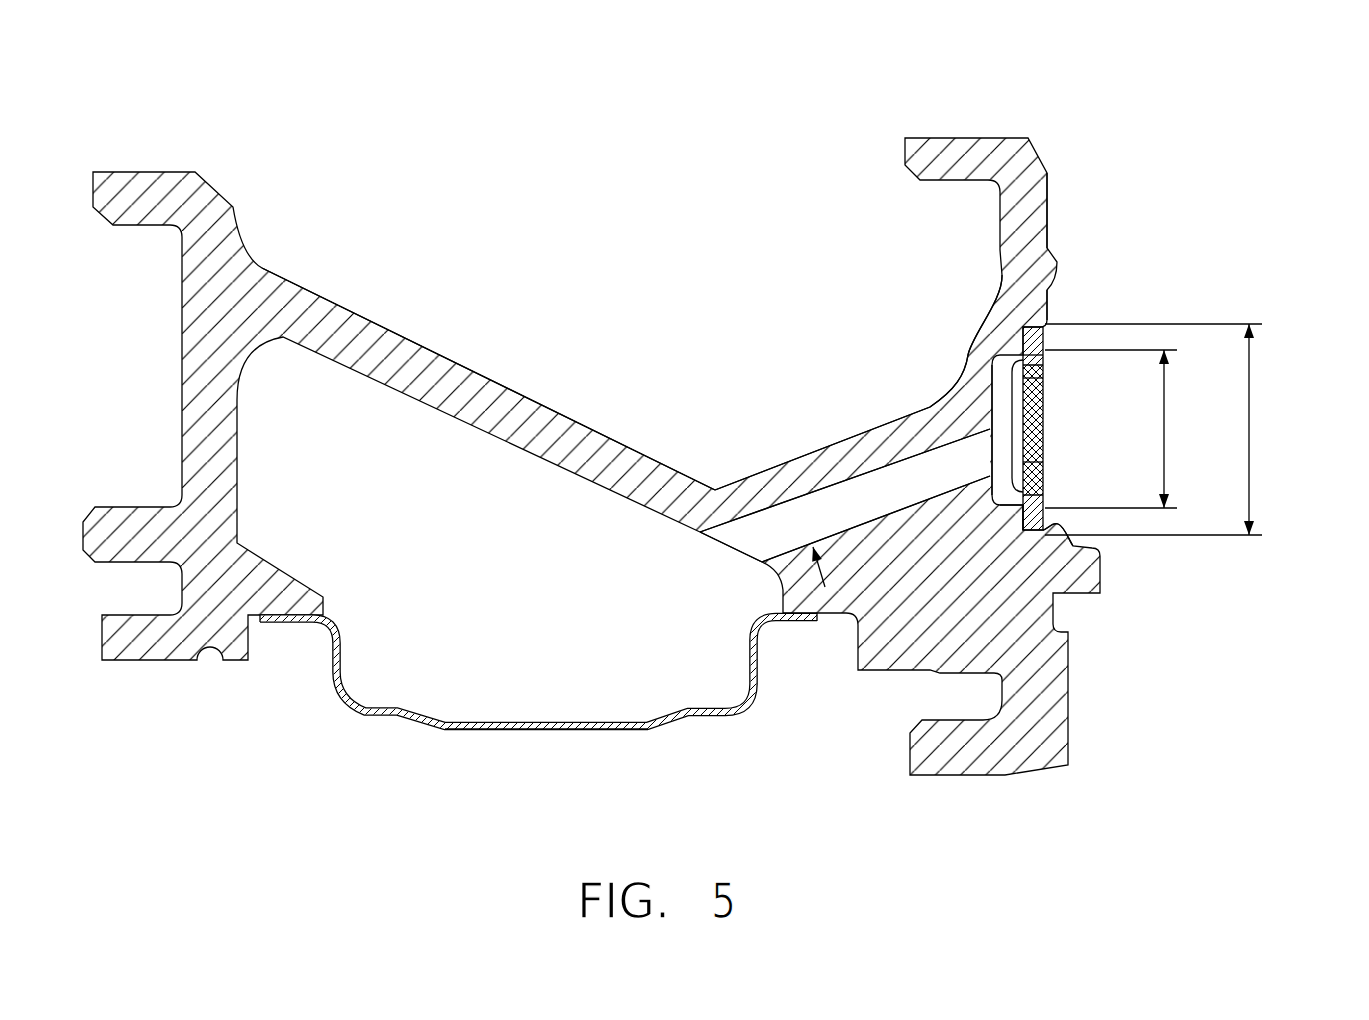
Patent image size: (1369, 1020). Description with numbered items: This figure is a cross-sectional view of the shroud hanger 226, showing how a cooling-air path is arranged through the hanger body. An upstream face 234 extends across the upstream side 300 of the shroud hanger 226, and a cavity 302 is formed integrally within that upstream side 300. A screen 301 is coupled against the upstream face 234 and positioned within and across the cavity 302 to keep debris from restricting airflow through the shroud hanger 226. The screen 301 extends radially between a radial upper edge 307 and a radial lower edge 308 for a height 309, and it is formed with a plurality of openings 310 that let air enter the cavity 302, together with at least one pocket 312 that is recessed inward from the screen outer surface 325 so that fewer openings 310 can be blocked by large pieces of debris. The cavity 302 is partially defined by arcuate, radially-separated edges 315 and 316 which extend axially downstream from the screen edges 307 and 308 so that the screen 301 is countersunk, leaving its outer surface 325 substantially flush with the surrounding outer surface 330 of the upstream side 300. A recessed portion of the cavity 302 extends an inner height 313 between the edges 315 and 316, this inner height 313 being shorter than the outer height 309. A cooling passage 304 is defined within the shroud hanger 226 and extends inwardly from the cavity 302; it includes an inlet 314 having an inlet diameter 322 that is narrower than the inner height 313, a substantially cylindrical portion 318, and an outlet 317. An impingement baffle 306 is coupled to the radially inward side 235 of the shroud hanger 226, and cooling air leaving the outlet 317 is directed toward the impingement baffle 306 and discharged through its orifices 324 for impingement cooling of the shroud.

The shroud hanger 226 is at (78, 233).
The upstream side 300 is at (1067, 157).
The upstream face 234 is at (1050, 218).
The outer surface 330 is at (1050, 290).
The radial upper edge 307 is at (1048, 325).
The screen 301 is at (1023, 330).
The substantially cylindrical portion 318 is at (890, 462).
The inlet diameter 322 is at (792, 493).
The radially inward side 235 is at (508, 467).
The outlet 317 is at (738, 553).
The cooling passage 304 is at (893, 500).
The orifice 324 is at (517, 730).
The impingement baffle 306 is at (603, 730).
The radially-separated edge 315 is at (1040, 360).
The opening 310 is at (1040, 378).
The cavity 302 is at (1015, 400).
The inlet 314 is at (992, 455).
The pocket 312 is at (1035, 460).
The radially-separated edge 316 is at (1010, 500).
The inner height 313 is at (1164, 440).
The height 309 is at (1250, 382).
The radial lower edge 308 is at (1063, 533).
The outer surface 325 is at (1047, 518).